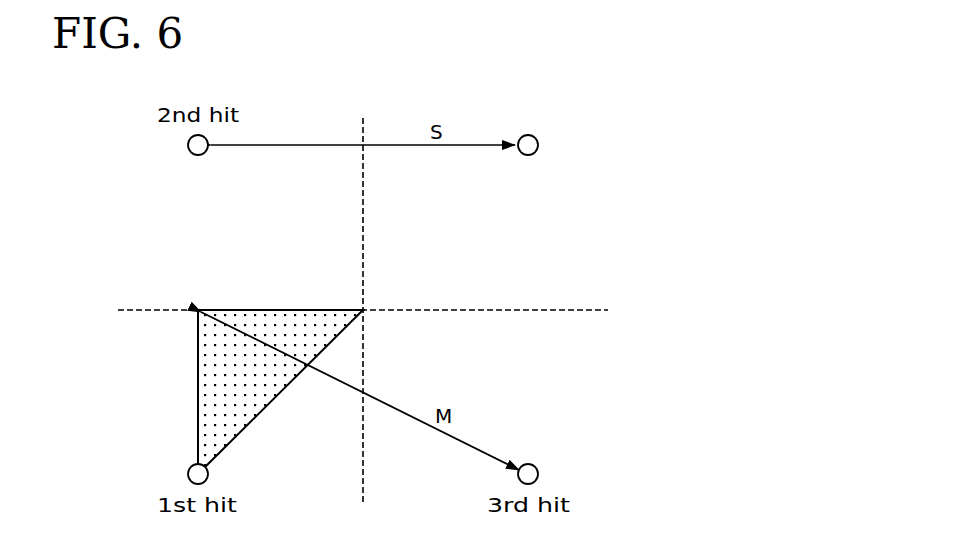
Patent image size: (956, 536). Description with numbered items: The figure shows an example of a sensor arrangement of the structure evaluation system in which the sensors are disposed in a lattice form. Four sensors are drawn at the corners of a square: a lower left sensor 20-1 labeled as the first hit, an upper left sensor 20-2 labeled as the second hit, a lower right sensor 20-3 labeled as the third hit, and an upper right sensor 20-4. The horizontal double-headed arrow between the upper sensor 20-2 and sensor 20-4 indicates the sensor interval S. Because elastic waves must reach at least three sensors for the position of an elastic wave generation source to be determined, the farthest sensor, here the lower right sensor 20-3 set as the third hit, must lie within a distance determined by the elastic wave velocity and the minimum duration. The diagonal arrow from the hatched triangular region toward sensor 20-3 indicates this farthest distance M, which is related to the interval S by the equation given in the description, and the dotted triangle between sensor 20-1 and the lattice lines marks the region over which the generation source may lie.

The sensor 20-1 is at (188, 474).
The sensor 20-2 is at (188, 145).
The sensor 20-3 is at (538, 474).
The sensor 20-4 is at (538, 145).